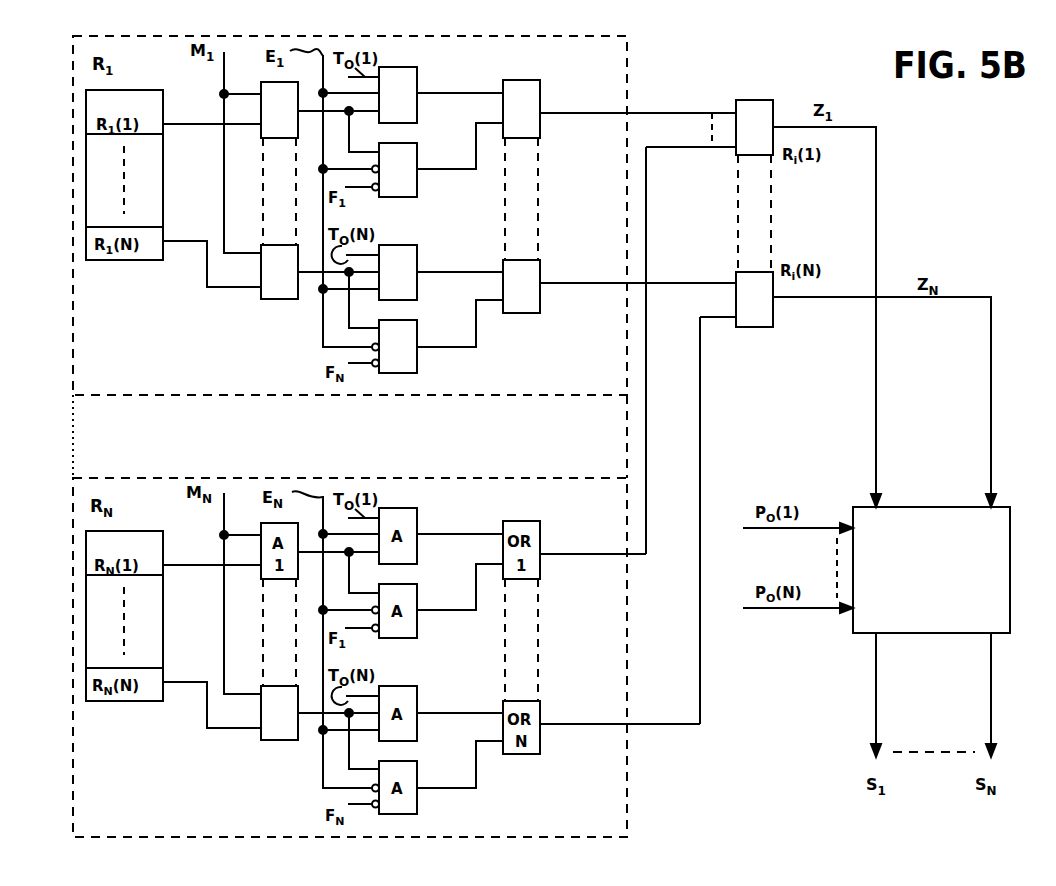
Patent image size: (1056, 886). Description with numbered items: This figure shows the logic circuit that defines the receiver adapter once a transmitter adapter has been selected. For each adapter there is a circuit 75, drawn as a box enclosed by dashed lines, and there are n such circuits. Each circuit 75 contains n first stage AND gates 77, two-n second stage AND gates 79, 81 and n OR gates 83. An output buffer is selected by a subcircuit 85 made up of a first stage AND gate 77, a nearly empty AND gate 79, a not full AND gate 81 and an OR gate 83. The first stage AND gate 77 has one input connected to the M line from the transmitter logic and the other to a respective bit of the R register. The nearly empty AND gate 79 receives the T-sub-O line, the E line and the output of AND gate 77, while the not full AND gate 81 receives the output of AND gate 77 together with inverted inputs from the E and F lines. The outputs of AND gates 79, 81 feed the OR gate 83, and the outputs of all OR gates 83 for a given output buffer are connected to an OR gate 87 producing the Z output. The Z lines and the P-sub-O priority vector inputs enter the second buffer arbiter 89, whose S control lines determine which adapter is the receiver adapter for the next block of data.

The circuit 75 is at (627, 73).
The first stage AND gate 77 is at (299, 86).
The nearly empty AND gate 79 is at (417, 67).
The not full AND gate 81 is at (417, 143).
The OR gate 83 is at (552, 66).
The subcircuit 85 is at (573, 210).
The OR gate 87 is at (758, 98).
The second buffer arbiter 89 is at (1010, 507).